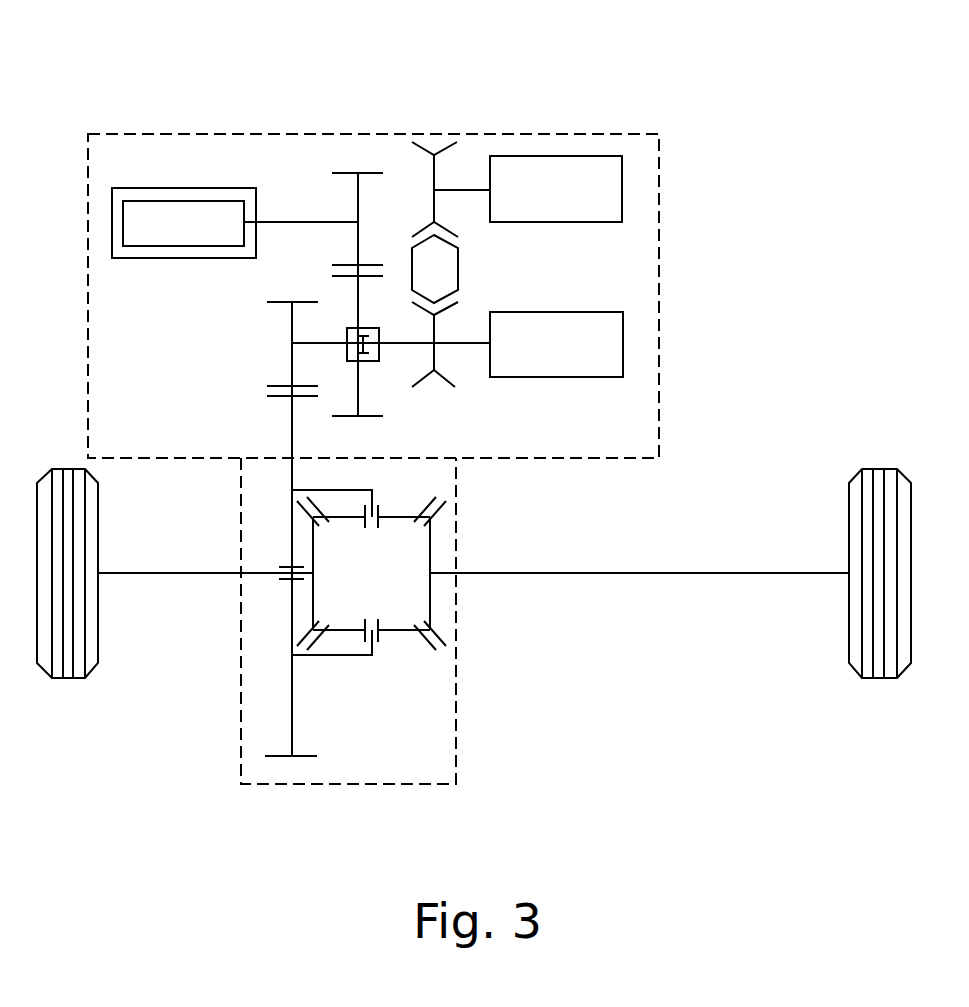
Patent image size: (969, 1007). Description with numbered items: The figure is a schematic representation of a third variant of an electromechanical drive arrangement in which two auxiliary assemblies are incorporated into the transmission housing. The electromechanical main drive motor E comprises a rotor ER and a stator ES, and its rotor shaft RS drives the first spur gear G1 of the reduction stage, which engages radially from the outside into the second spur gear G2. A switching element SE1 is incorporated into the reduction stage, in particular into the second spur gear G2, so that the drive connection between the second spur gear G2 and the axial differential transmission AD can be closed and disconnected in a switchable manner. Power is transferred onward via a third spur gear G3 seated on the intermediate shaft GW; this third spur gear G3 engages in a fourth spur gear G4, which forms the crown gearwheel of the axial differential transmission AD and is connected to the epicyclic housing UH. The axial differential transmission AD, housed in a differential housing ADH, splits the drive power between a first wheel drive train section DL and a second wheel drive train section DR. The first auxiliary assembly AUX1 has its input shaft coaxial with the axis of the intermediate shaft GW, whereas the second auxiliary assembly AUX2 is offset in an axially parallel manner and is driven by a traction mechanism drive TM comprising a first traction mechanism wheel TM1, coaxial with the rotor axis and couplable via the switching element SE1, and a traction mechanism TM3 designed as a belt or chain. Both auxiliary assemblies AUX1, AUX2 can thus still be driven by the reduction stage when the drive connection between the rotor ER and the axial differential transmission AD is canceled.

The electromechanical main drive motor E is at (184, 157).
The stator ES is at (184, 223).
The rotor ER is at (188, 203).
The rotor shaft RS is at (301, 155).
The first spur gear G1 is at (368, 172).
The switching element SE1 is at (362, 262).
The second spur gear G2 is at (370, 417).
The third spur gear G3 is at (267, 302).
The intermediate shaft GW is at (312, 346).
The traction mechanism drive TM is at (518, 234).
The first traction mechanism wheel TM1 is at (443, 152).
The traction mechanism TM3 is at (440, 265).
The first auxiliary assembly AUX1 is at (556, 344).
The second auxiliary assembly AUX2 is at (528, 189).
The axial differential transmission AD is at (428, 623).
The differential housing ADH is at (428, 672).
The epicyclic housing UH is at (347, 657).
The fourth spur gear G4 is at (326, 805).
The first wheel drive train section DL is at (147, 573).
The second wheel drive train section DR is at (792, 573).